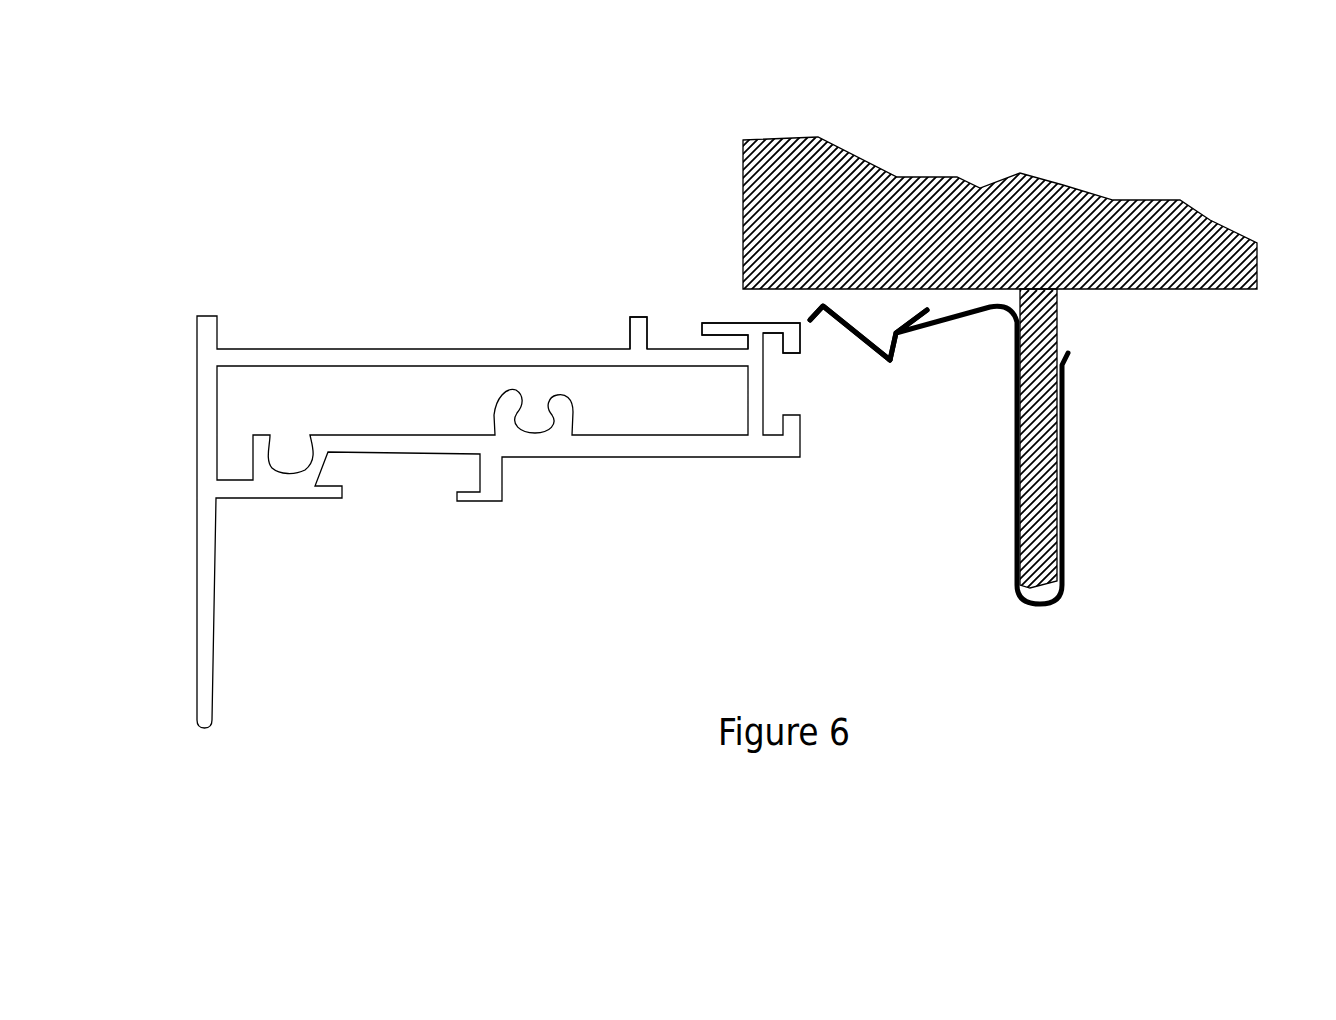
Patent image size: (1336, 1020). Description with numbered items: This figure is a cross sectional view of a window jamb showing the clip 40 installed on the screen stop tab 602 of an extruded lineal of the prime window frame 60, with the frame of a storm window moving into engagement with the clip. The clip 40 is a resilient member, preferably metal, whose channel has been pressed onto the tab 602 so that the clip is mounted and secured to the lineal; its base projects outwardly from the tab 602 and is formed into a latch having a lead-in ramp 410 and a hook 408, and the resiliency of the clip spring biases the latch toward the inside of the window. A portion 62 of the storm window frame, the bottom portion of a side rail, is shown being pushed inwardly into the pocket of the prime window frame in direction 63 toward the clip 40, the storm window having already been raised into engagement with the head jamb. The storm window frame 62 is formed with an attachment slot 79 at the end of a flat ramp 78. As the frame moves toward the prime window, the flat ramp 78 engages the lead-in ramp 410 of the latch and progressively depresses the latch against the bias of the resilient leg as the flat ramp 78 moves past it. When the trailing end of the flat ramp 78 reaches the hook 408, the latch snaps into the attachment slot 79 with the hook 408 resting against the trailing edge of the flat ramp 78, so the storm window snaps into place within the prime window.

The storm window frame 62 is at (453, 323).
The attachment slot 79 is at (671, 318).
The flat ramp 78 is at (747, 323).
The window frame 60 is at (1094, 176).
The screen stop tab 602 is at (1062, 344).
The clip 40 is at (958, 332).
The lead-in ramp 410 is at (853, 335).
The hook 408 is at (893, 346).
The direction 63 is at (766, 535).